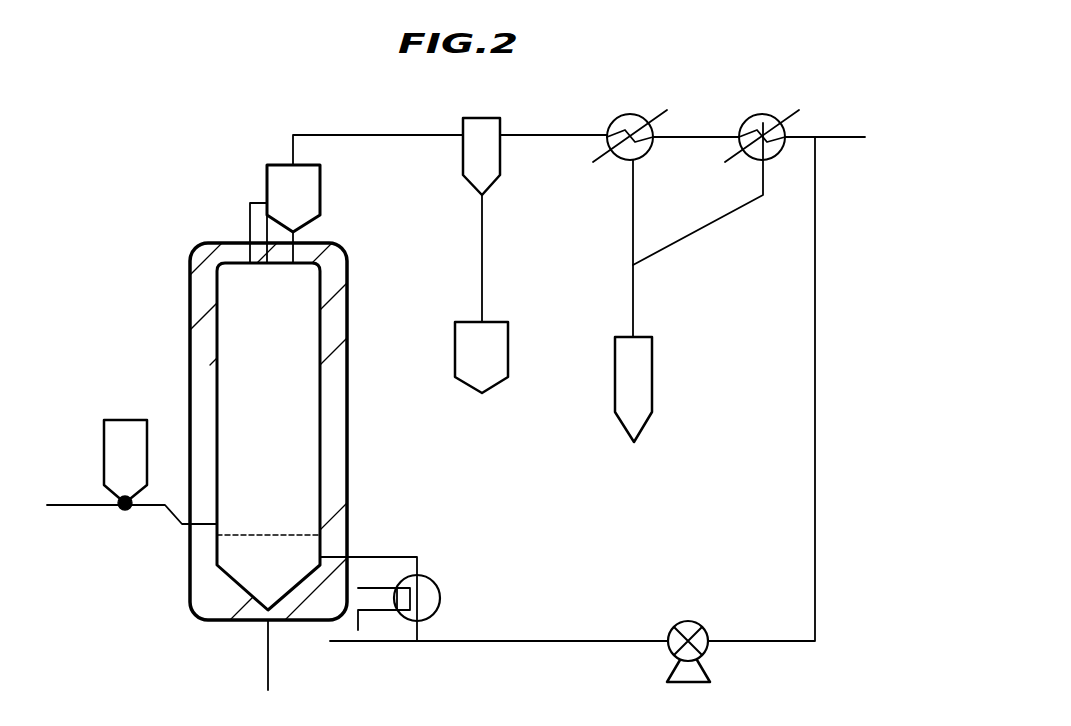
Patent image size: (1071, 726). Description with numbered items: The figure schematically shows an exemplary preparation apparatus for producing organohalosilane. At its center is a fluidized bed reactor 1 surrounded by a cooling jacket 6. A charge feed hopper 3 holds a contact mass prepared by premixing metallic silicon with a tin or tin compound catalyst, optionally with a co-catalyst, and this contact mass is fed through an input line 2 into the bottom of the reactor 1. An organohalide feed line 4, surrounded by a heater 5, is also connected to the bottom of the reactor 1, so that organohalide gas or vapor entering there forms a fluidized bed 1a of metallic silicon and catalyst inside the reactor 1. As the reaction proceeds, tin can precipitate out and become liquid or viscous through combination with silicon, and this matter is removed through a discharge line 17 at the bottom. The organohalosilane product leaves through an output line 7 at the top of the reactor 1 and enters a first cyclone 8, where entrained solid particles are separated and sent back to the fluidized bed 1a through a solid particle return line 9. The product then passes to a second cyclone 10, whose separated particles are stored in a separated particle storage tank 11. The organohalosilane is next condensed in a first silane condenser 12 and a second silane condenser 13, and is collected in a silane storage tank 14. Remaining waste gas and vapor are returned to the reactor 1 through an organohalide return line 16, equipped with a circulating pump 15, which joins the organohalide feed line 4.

The fluidized bed reactor 1 is at (203, 290).
The fluidized bed 1a is at (295, 442).
The input line 2 is at (148, 508).
The charge feed hopper 3 is at (123, 443).
The organohalide feed line 4 is at (415, 557).
The heater 5 is at (440, 598).
The cooling jacket 6 is at (333, 368).
The output line 7 is at (250, 228).
The first cyclone 8 is at (310, 183).
The solid particle return line 9 is at (295, 240).
The second cyclone 10 is at (478, 140).
The separated particle storage tank 11 is at (490, 350).
The first silane condenser 12 is at (640, 148).
The second silane condenser 13 is at (777, 147).
The silane storage tank 14 is at (637, 375).
The circulating pump 15 is at (688, 622).
The organohalide return line 16 is at (543, 640).
The discharge line 17 is at (268, 668).